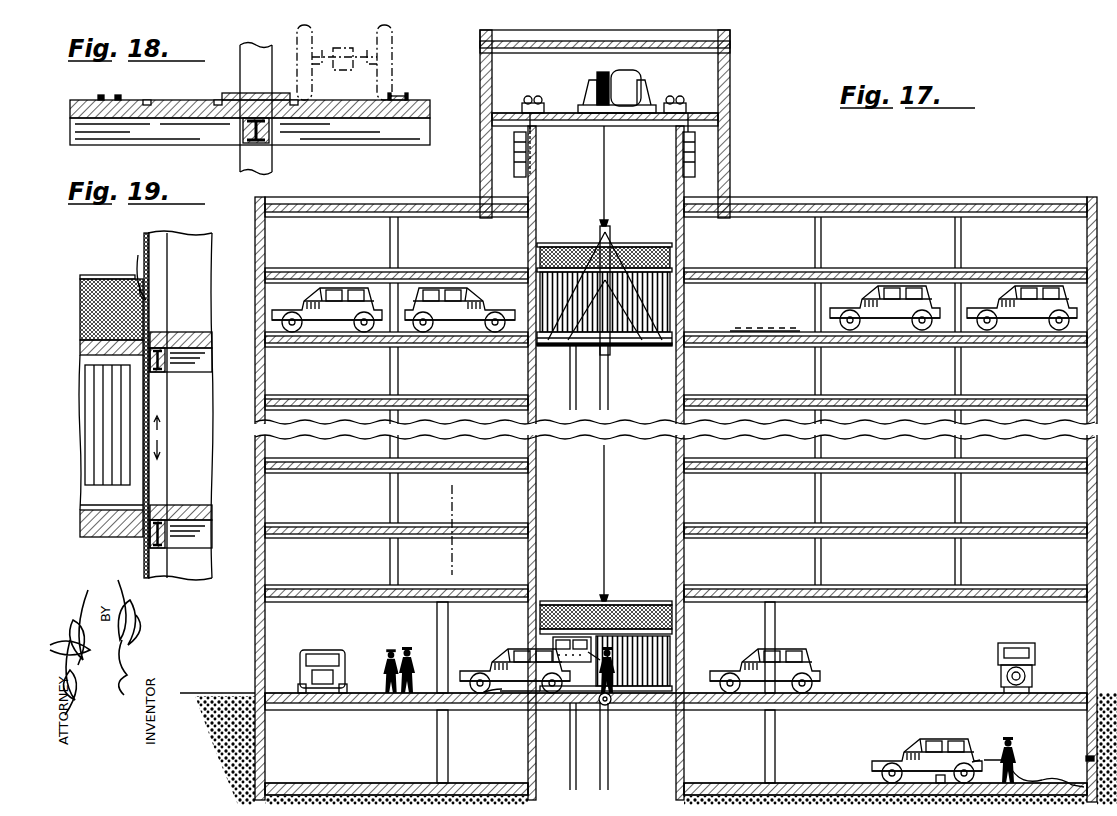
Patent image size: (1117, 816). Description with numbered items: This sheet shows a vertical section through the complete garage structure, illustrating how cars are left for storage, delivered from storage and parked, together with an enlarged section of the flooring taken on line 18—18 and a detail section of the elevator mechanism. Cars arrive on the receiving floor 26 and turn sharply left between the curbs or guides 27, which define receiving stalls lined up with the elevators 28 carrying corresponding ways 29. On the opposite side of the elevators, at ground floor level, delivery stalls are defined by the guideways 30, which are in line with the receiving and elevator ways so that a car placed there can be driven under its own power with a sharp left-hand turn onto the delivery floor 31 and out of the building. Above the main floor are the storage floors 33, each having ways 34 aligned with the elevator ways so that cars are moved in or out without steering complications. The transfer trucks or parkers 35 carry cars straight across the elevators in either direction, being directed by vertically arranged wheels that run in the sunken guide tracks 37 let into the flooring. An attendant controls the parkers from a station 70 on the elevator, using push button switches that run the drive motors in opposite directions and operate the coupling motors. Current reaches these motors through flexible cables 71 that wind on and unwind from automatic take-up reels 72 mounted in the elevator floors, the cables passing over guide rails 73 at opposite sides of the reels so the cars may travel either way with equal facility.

In FIG. 17, the section line 18— 18 is at (463, 496).
In FIG. 17, the receiving floor 26 is at (968, 667).
In FIG. 17, the curbs or guides 27 is at (697, 693).
In FIG. 17, the elevator 28 is at (620, 258).
In FIG. 19, the elevator 28 is at (97, 537).
In FIG. 17, the ways 29 is at (645, 690).
In FIG. 19, the ways 29 is at (100, 508).
In FIG. 17, the guideways 30 is at (454, 687).
In FIG. 17, the delivery floor 31 is at (339, 659).
In FIG. 17, the storage floors 33 is at (924, 401).
In FIG. 17, the ways 34 is at (760, 268).
In FIG. 18, the ways 34 is at (118, 96).
In FIG. 19, the ways 34 is at (188, 332).
In FIG. 17, the transfer trucks or parkers 35 is at (748, 328).
In FIG. 18, the sunken guide tracks 37 is at (150, 100).
In FIG. 17, the control station 70 is at (563, 637).
In FIG. 17, the flexible cables 71 is at (578, 706).
In FIG. 17, the automatic take-up reels 72 is at (610, 705).
In FIG. 17, the guide rails 73 is at (594, 710).